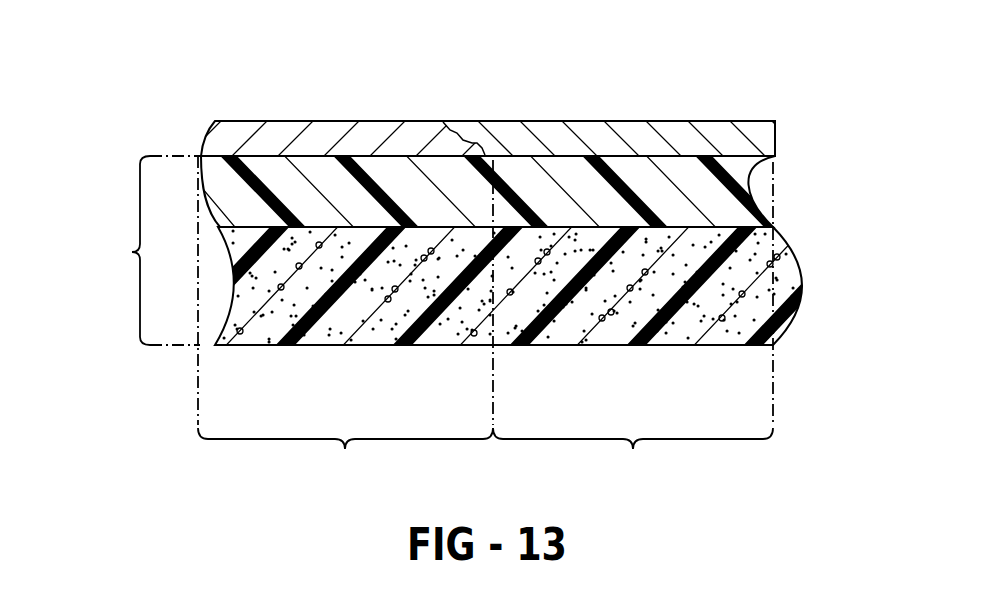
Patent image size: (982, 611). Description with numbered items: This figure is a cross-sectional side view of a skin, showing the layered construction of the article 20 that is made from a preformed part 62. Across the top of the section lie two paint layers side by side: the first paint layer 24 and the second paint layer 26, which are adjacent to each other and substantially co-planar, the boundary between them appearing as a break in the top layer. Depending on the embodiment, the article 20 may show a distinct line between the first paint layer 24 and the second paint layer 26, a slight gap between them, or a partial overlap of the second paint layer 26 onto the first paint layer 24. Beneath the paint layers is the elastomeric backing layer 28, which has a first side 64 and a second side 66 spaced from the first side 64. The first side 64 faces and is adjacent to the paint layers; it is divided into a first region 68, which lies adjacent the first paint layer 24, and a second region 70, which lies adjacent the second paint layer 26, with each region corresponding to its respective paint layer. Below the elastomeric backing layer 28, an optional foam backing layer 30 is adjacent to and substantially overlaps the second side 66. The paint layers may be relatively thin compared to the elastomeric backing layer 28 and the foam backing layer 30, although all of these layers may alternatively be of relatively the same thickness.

The article 20 is at (118, 144).
The first paint layer 24 is at (245, 126).
The second paint layer 26 is at (738, 130).
The elastomeric backing layer 28 is at (741, 173).
The foam backing layer 30 is at (803, 278).
The preformed part 62 is at (124, 250).
The first side 64 is at (663, 153).
The second side 66 is at (743, 244).
The first region 68 is at (345, 451).
The second region 70 is at (633, 451).